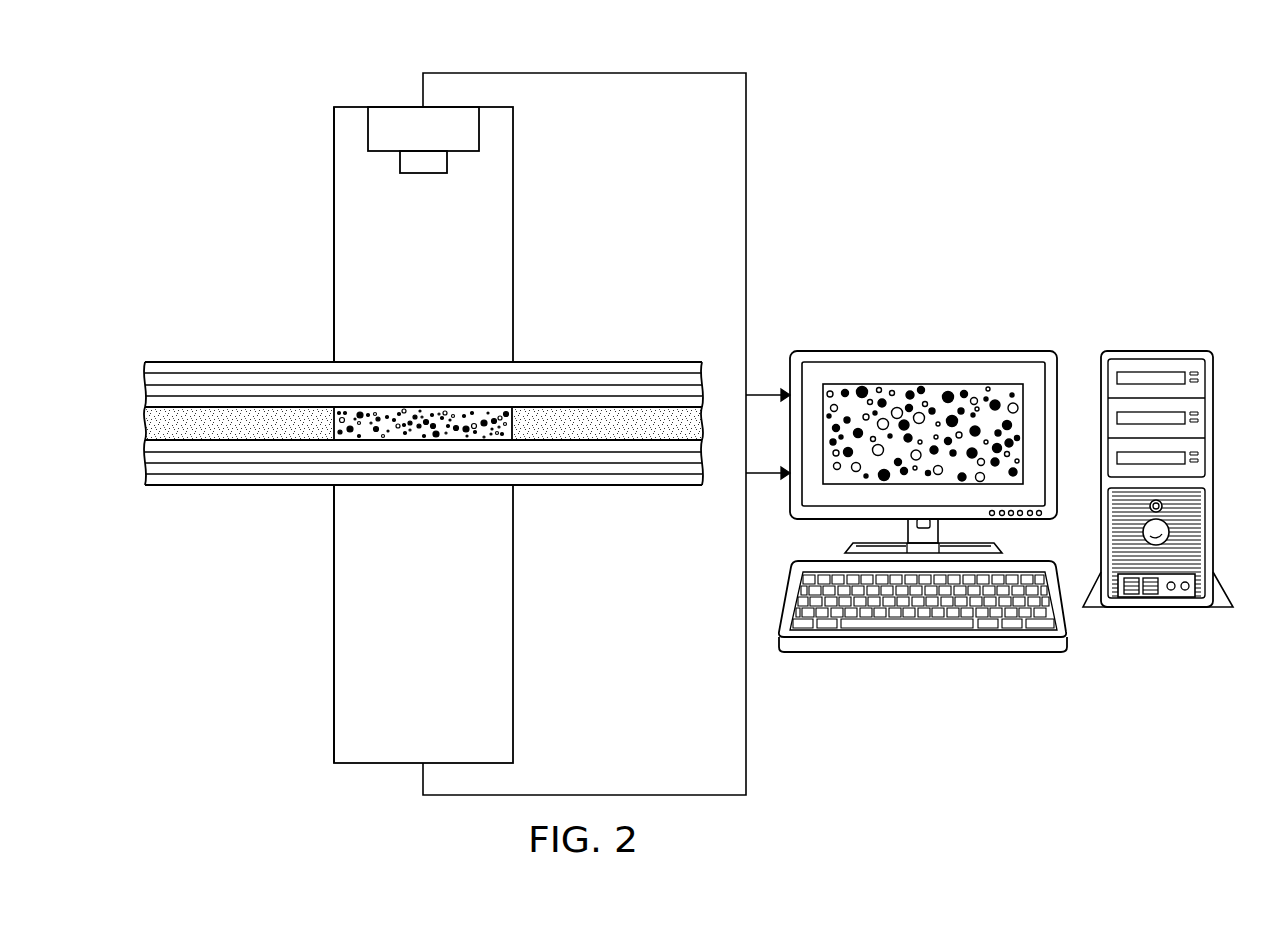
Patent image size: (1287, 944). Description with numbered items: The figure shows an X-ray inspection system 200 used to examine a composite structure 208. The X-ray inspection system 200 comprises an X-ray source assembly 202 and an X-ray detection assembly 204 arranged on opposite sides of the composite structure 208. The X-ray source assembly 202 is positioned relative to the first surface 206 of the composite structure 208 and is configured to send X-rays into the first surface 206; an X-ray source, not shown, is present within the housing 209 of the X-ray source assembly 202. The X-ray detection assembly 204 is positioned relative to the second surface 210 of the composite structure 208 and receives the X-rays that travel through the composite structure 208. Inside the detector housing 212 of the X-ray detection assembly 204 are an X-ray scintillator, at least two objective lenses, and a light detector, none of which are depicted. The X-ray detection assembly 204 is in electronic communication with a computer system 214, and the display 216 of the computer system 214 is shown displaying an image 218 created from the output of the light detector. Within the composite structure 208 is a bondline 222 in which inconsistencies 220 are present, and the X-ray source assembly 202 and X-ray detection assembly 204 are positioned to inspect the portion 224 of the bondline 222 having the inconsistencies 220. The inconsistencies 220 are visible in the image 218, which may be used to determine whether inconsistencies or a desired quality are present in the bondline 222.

The X-ray inspection system 200 is at (238, 88).
The X-ray source assembly 202 is at (444, 266).
The X-ray detection assembly 204 is at (444, 631).
The first surface 206 is at (582, 362).
The composite structure 208 is at (262, 494).
The housing 209 is at (334, 240).
The second surface 210 is at (577, 486).
The detector housing 212 is at (334, 618).
The computer system 214 is at (1099, 320).
The display 216 is at (880, 375).
The image 218 is at (953, 383).
The inconsistencies 220 is at (449, 408).
The bondline 222 is at (144, 426).
The portion 224 is at (324, 425).